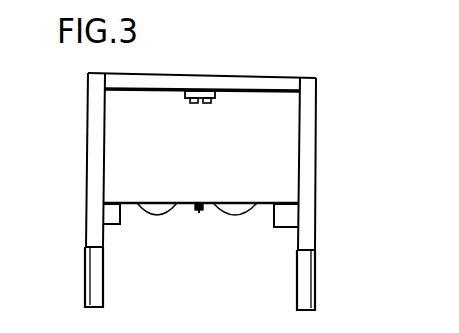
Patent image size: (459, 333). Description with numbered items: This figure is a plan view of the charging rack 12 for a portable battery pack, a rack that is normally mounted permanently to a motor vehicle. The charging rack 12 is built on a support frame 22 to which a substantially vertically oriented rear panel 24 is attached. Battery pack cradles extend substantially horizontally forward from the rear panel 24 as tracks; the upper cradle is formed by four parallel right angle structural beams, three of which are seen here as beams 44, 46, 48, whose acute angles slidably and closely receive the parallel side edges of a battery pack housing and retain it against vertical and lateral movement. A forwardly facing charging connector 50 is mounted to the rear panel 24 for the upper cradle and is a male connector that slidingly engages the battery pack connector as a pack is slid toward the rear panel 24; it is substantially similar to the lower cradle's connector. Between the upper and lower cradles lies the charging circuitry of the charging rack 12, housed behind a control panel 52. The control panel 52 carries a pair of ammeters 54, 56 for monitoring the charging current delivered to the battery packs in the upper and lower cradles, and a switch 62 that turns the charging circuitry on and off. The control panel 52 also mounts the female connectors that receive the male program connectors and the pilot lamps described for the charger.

The charging rack 12 is at (318, 255).
The support frame 22 is at (225, 82).
The rear panel 24 is at (254, 92).
The structural beam 44 is at (298, 302).
The structural beam 46 is at (97, 273).
The structural beam 48 is at (97, 105).
The charging connector 50 is at (305, 143).
The control panel 52 is at (265, 208).
The ammeter 54 is at (157, 210).
The ammeter 56 is at (240, 212).
The switch 62 is at (199, 211).